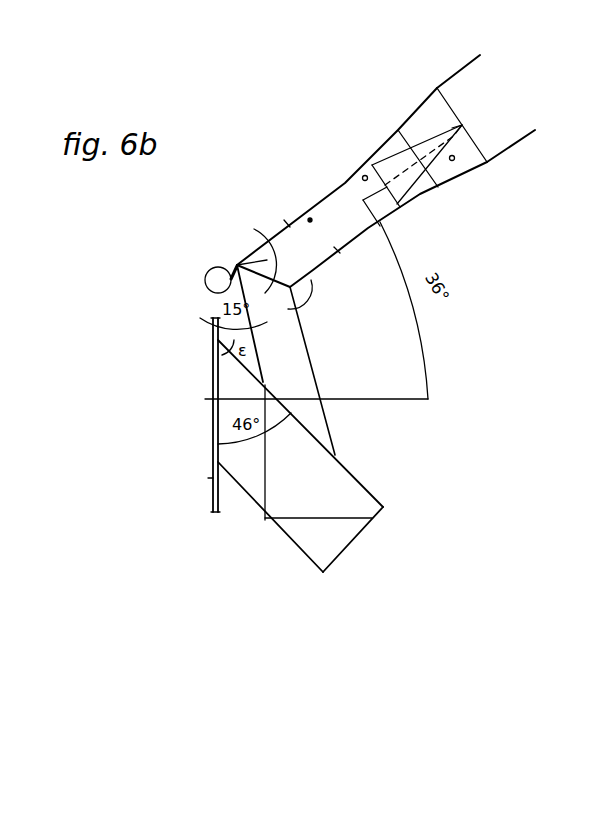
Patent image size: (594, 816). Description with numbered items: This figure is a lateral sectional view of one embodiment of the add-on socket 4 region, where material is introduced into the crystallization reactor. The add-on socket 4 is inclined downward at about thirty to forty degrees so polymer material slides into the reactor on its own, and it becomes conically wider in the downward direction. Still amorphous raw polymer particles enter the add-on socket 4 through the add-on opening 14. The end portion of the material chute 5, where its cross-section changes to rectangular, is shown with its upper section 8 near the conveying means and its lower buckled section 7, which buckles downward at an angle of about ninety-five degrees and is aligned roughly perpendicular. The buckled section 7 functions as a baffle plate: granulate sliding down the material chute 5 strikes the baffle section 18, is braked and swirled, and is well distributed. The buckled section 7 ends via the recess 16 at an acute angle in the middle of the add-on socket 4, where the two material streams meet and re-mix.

The add-on socket 4 is at (358, 495).
The material chute 5 is at (318, 207).
The buckled section 7 is at (296, 338).
The upper section 8 is at (516, 146).
The add-on opening 14 is at (210, 409).
The recess 16 is at (303, 426).
The baffle section 18 is at (237, 265).